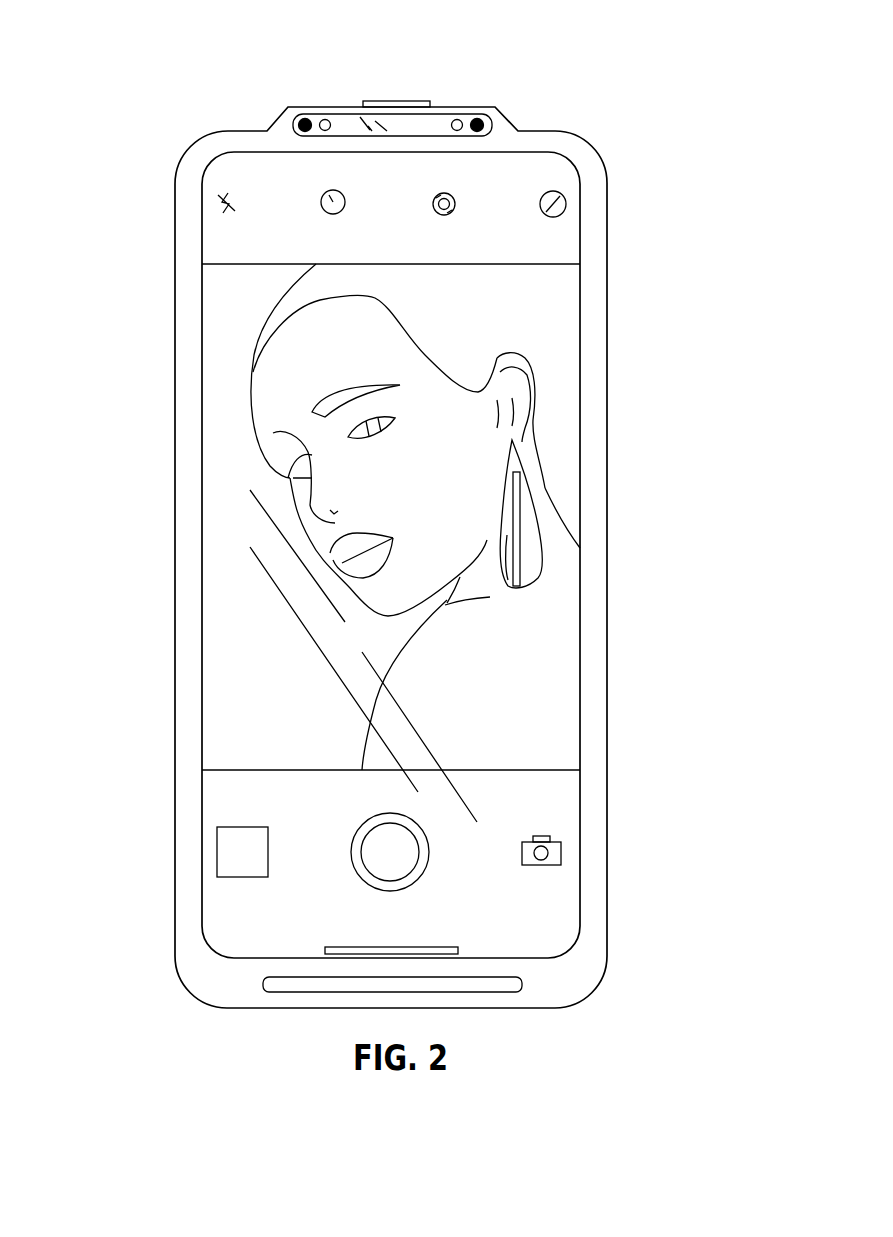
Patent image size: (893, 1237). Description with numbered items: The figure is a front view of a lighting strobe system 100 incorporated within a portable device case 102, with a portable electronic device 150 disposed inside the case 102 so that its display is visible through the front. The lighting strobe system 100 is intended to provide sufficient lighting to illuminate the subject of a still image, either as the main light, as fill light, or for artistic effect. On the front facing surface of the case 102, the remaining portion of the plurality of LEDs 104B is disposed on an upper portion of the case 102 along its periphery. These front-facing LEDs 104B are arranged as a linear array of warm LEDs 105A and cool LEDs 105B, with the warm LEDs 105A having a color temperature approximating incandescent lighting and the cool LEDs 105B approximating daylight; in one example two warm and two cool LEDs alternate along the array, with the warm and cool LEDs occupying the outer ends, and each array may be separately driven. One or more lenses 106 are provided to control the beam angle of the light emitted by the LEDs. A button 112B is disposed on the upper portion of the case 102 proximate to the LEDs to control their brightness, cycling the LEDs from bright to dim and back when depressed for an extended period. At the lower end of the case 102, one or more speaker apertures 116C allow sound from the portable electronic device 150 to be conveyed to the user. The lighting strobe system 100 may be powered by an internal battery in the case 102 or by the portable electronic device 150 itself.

The lighting strobe system 100 is at (82, 21).
The portable device case 102 is at (610, 528).
The remaining portion of the plurality of LEDs 104B is at (270, 129).
The warm LEDs 105A is at (468, 115).
The cool LEDs 105B is at (483, 122).
The lenses 106 is at (426, 108).
The button 112B is at (368, 101).
The speaker apertures 116C is at (327, 983).
The portable electronic device 150 is at (223, 238).